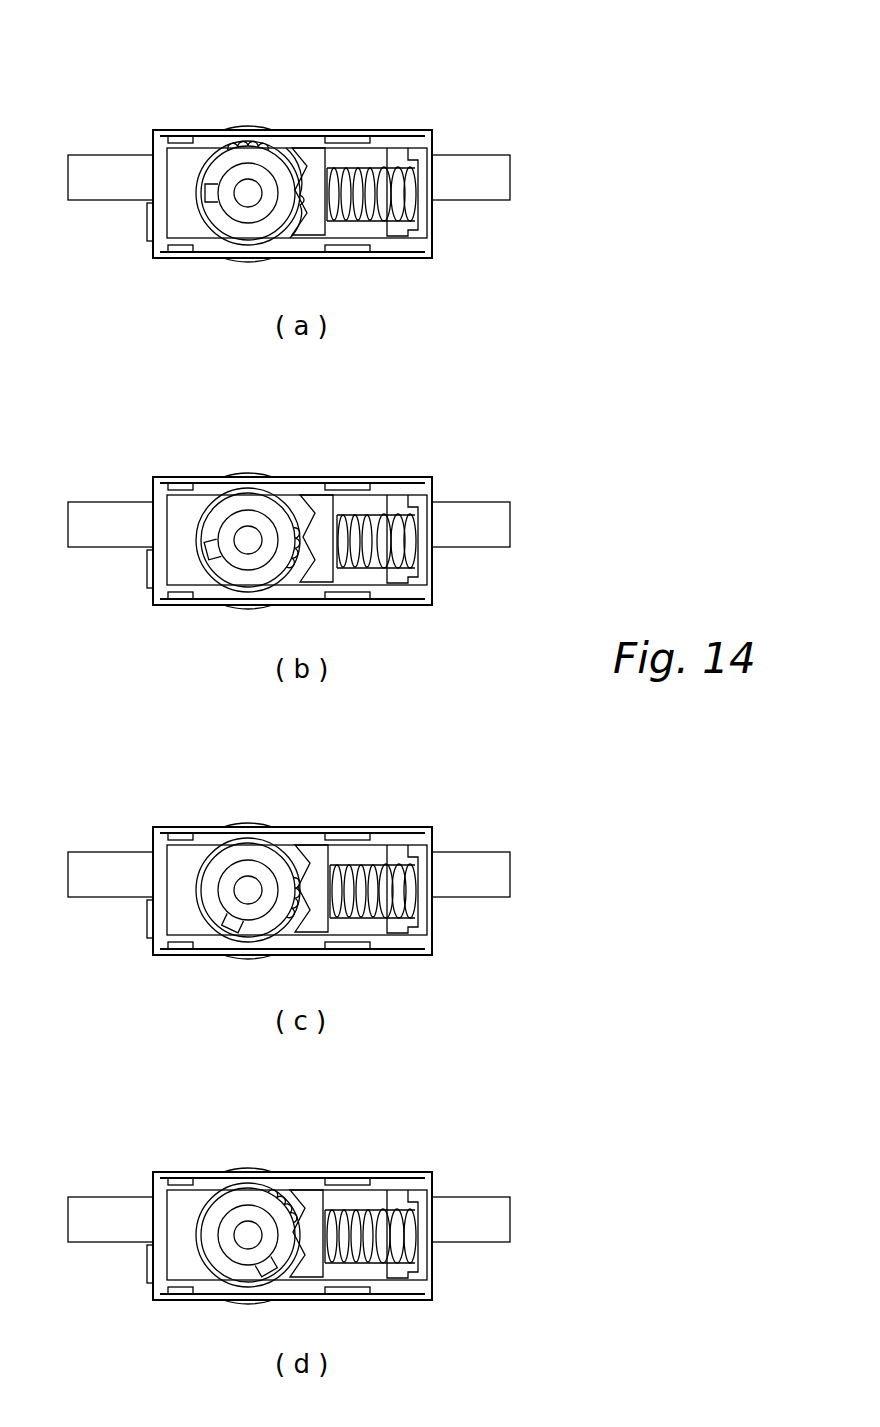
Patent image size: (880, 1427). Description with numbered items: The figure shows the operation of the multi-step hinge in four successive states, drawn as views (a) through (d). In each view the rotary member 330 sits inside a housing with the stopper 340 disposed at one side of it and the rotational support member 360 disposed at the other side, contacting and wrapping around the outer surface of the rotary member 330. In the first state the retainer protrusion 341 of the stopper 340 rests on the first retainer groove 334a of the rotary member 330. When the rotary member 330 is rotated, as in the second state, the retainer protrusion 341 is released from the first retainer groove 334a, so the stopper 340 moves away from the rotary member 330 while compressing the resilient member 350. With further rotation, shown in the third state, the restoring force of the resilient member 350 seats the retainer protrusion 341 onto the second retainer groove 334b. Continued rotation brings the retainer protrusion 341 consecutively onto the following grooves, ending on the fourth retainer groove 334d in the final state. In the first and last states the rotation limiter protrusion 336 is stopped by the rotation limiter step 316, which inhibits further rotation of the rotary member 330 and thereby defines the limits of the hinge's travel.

The rotation limiter step 316 is at (213, 213).
The rotary member 330 is at (222, 150).
The first retainer groove 334a is at (284, 165).
The second retainer groove 334b is at (292, 520).
The fourth retainer groove 334d is at (297, 1195).
The rotation limiter protrusion 336 is at (205, 195).
The stopper 340 is at (343, 165).
The retainer protrusion 341 is at (322, 175).
The resilient member 350 is at (440, 150).
The rotational support member 360 is at (183, 162).